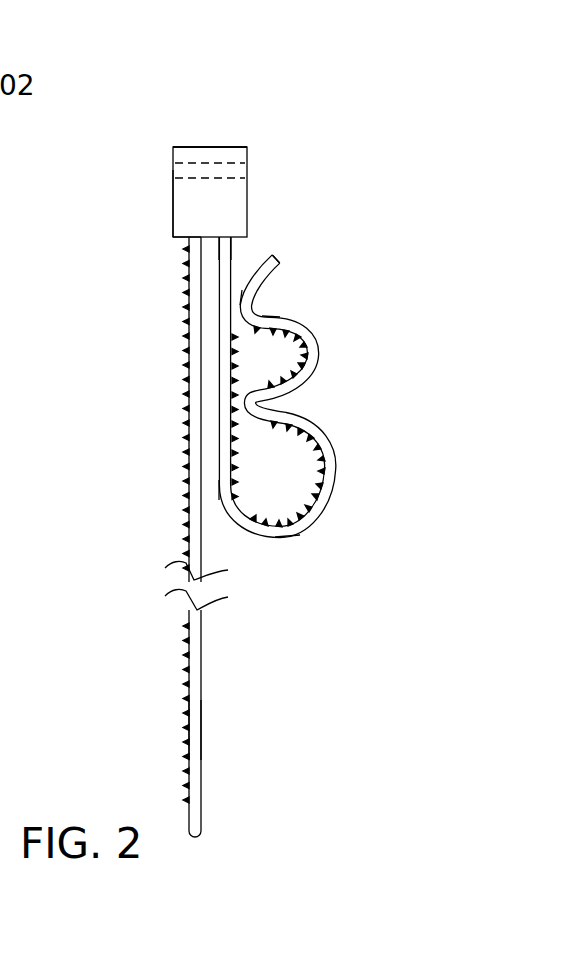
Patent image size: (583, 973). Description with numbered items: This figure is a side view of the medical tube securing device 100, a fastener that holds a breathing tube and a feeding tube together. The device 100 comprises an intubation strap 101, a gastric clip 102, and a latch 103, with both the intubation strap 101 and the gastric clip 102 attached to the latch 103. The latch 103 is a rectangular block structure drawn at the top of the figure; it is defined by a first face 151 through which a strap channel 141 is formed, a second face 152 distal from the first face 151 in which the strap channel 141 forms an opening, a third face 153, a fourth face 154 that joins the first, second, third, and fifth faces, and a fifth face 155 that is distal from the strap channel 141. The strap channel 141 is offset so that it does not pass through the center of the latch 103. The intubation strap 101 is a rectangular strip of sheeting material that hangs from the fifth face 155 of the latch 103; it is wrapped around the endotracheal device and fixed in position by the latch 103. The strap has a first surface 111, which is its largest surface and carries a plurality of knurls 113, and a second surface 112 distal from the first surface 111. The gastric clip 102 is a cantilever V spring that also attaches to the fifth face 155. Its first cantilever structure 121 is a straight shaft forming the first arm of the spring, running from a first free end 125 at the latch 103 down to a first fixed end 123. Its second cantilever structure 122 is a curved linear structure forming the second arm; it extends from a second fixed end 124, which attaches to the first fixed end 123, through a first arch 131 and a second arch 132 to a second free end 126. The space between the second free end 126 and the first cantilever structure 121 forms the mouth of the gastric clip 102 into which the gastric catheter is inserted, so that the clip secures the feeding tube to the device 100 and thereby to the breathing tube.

The medical tube securing device 100 is at (137, 125).
The intubation strap 101 is at (201, 815).
The gastric clip 102 is at (335, 450).
The latch 103 is at (247, 197).
The first surface 111 is at (186, 678).
The second surface 112 is at (201, 680).
The plurality of knurls 113 is at (185, 353).
The first cantilever structure 121 is at (232, 285).
The second cantilever structure 122 is at (255, 318).
The first fixed end 123 is at (241, 532).
The second fixed end 124 is at (287, 530).
The first free end 125 is at (233, 247).
The second free end 126 is at (279, 263).
The first arch 131 is at (313, 373).
The second arch 132 is at (338, 487).
The strap channel 141 is at (225, 162).
The first face 151 is at (173, 190).
The second face 152 is at (247, 153).
The third face 153 is at (199, 147).
The fourth face 154 is at (183, 211).
The fifth face 155 is at (179, 238).